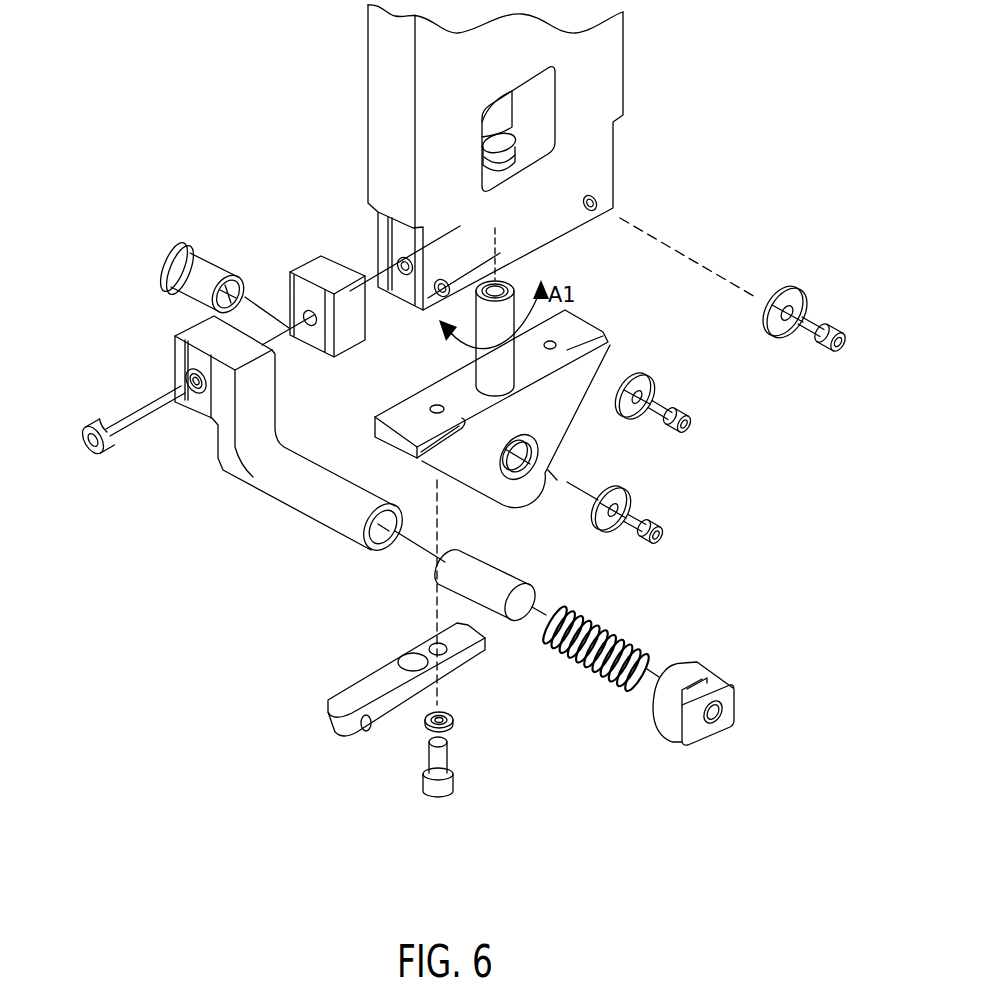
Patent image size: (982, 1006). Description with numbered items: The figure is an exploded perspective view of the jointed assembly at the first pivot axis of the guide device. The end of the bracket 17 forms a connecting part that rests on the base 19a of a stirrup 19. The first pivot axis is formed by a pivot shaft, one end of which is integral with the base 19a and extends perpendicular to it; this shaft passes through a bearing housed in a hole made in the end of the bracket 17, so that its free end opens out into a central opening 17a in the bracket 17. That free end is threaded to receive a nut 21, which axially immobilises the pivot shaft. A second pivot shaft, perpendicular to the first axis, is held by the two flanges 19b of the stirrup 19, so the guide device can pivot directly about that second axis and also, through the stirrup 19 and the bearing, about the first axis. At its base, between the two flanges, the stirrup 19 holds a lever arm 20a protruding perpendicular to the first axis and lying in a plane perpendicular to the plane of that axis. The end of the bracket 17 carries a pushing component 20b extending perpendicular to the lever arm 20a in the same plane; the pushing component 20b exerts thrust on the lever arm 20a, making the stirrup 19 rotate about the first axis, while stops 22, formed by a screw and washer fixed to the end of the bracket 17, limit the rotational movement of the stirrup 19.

The bracket 17 is at (382, 122).
The central opening 17a is at (540, 100).
The stirrup 19 is at (542, 503).
The base 19a is at (460, 390).
The flanges 19b is at (480, 488).
The lever arm 20a is at (365, 690).
The pushing component 20b is at (298, 497).
The nut 21 is at (545, 161).
The stops 22 is at (790, 287).